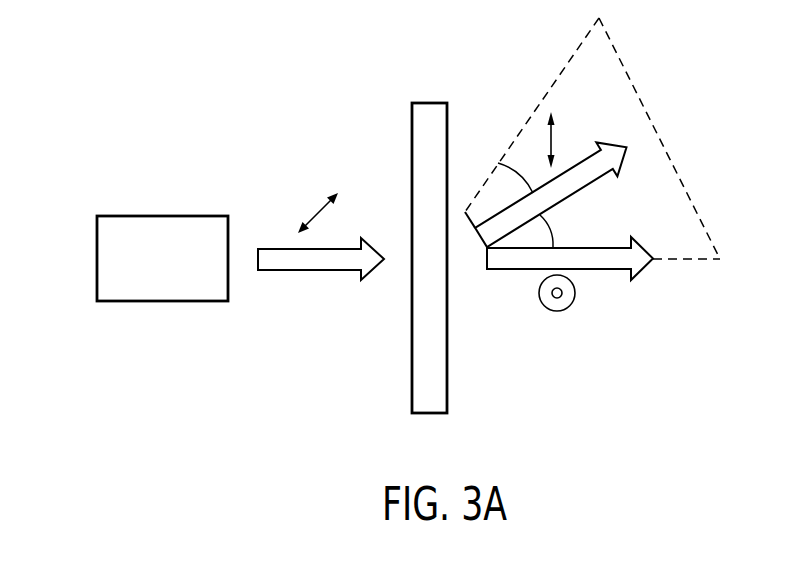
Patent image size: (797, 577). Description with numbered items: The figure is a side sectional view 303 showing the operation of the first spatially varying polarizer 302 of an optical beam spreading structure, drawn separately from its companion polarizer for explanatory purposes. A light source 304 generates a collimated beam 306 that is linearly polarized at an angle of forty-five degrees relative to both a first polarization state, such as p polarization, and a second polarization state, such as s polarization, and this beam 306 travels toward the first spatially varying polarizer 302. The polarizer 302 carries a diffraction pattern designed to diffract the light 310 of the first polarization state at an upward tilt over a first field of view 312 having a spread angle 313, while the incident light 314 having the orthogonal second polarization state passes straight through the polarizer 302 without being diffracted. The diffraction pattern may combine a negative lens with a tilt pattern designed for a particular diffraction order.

The view 303 is at (150, 69).
The light source 304 is at (97, 258).
The collimated beam 306 is at (314, 271).
The first spatially varying polarizer 302 is at (428, 103).
The first field of view 312 is at (630, 80).
The light of a first polarization state 310 is at (597, 183).
The spread angle 313 is at (552, 235).
The incident light having a second polarization state 314 is at (600, 270).